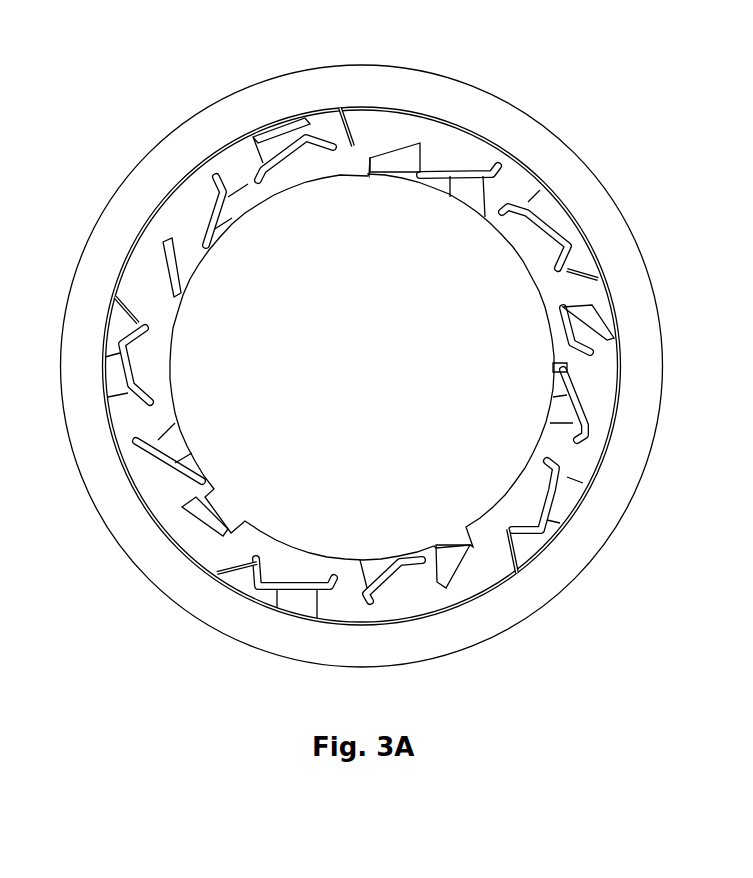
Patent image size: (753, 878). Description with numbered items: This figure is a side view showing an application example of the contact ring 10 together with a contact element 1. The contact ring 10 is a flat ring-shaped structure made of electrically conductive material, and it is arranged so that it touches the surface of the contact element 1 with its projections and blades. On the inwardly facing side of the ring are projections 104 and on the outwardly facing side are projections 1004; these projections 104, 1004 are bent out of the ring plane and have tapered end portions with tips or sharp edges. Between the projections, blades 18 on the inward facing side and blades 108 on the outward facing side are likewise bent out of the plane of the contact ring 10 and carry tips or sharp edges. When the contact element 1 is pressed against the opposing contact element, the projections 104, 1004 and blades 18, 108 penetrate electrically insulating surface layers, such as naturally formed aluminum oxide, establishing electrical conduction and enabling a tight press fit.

The contact element 1 is at (540, 148).
The contact ring 10 is at (180, 207).
The blade 18 is at (206, 516).
The projection 104 is at (210, 240).
The blade 108 is at (233, 572).
The projection 1004 is at (280, 130).